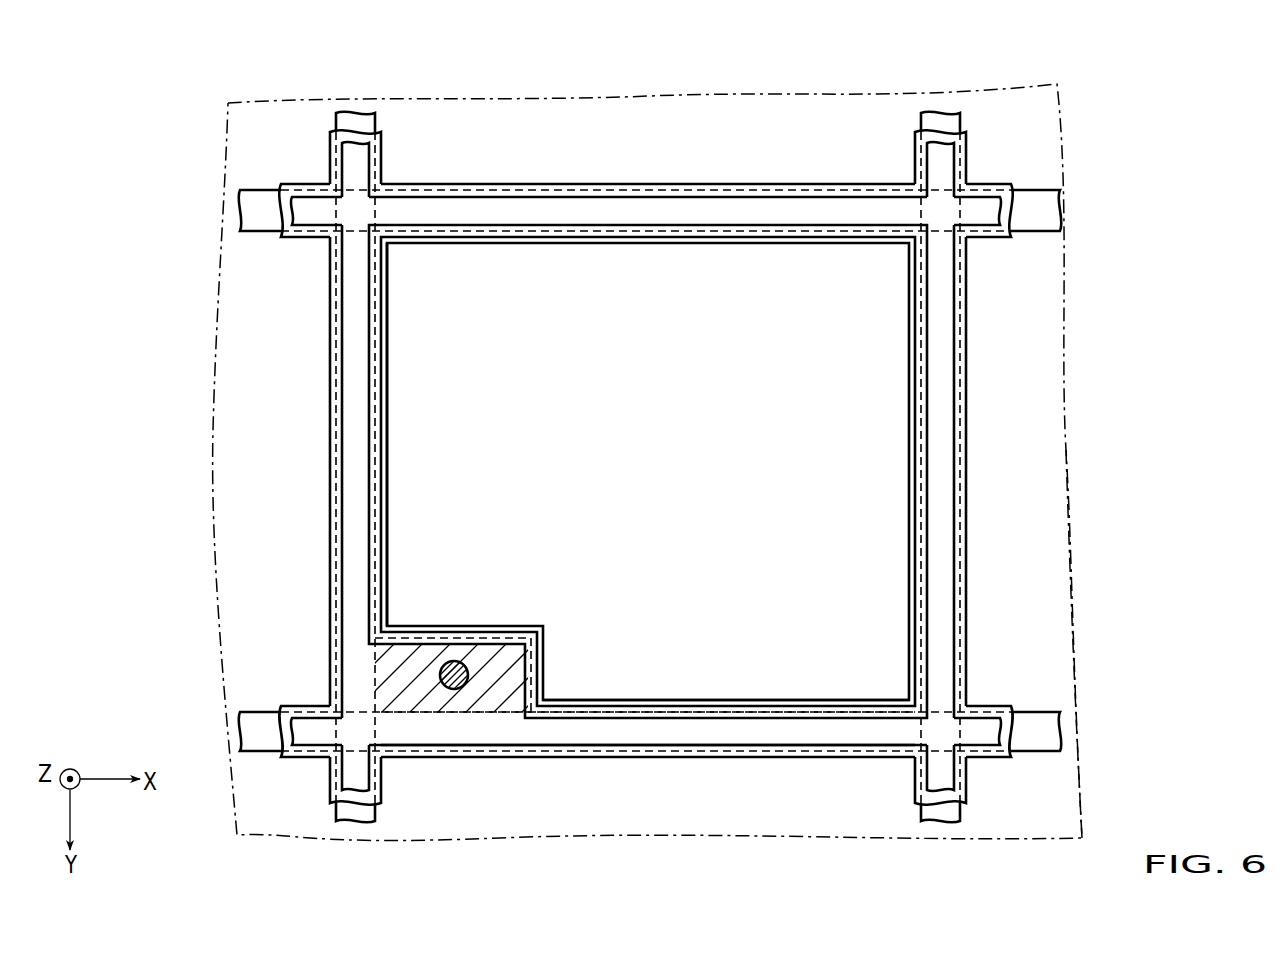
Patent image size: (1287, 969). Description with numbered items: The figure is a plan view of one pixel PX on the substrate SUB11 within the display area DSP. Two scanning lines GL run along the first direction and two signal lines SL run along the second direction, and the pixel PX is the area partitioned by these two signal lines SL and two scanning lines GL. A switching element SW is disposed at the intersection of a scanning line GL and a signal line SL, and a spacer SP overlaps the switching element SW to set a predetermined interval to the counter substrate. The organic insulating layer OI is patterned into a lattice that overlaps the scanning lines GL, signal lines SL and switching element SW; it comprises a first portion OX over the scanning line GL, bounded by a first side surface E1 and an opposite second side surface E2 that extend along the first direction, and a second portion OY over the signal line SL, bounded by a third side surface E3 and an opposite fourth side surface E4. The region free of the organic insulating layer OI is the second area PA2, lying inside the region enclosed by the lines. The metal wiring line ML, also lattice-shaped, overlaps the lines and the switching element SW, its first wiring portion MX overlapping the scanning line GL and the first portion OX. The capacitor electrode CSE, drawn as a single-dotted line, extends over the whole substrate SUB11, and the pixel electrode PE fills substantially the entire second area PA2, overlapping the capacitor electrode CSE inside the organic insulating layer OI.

The display area DSP is at (1000, 81).
The substrate SUB11 is at (1155, 220).
The capacitor electrode CSE is at (1072, 582).
The signal line SL is at (360, 812).
The scanning line GL is at (255, 222).
The second portion OY is at (328, 442).
The first portion OX is at (737, 184).
The organic insulating layer OI is at (675, 760).
The first wiring portion MX is at (722, 715).
The metal wiring line ML is at (358, 775).
The pixel PX is at (602, 232).
The second area PA2 is at (533, 268).
The pixel electrode PE is at (825, 668).
The first side surface E1 is at (595, 760).
The second side surface E2 is at (603, 700).
The third side surface E3 is at (327, 378).
The fourth side surface E4 is at (390, 373).
The switching element SW is at (505, 692).
The spacer SP is at (452, 689).